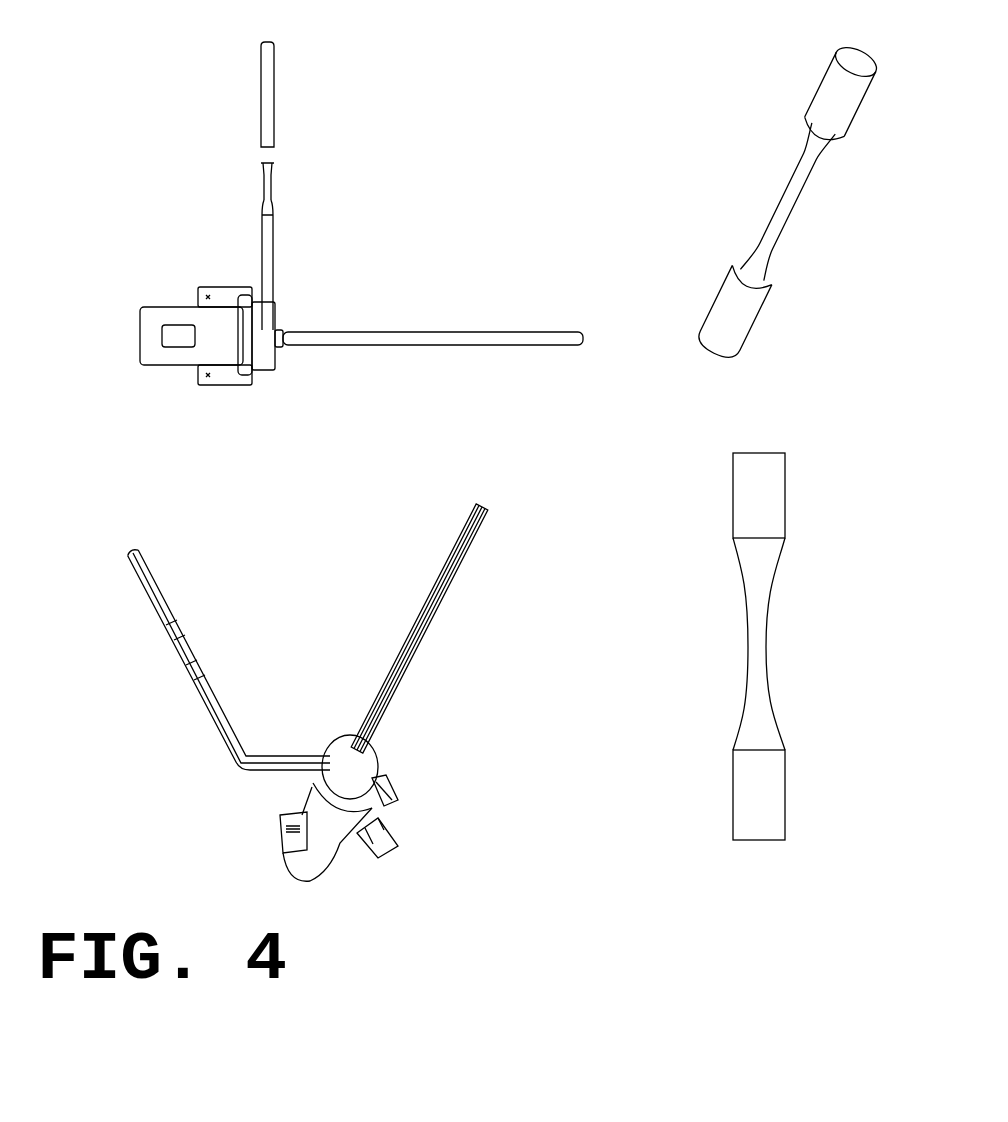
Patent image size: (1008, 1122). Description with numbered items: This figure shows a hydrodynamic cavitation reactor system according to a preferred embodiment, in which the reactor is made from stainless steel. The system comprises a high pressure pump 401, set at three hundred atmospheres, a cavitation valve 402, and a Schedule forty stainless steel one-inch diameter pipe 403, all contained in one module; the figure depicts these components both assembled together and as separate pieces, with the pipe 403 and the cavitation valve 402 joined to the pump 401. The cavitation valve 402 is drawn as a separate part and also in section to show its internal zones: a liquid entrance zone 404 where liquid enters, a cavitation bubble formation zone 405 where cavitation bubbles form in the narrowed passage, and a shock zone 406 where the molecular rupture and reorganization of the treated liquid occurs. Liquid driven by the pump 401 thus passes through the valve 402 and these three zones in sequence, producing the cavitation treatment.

The high pressure pump 401 is at (147, 307).
The cavitation valve 402 is at (255, 162).
The pipe 403 is at (472, 333).
The liquid entrance zone 404 is at (785, 790).
The cavitation bubble formation zone 405 is at (746, 640).
The shock zone 406 is at (787, 493).